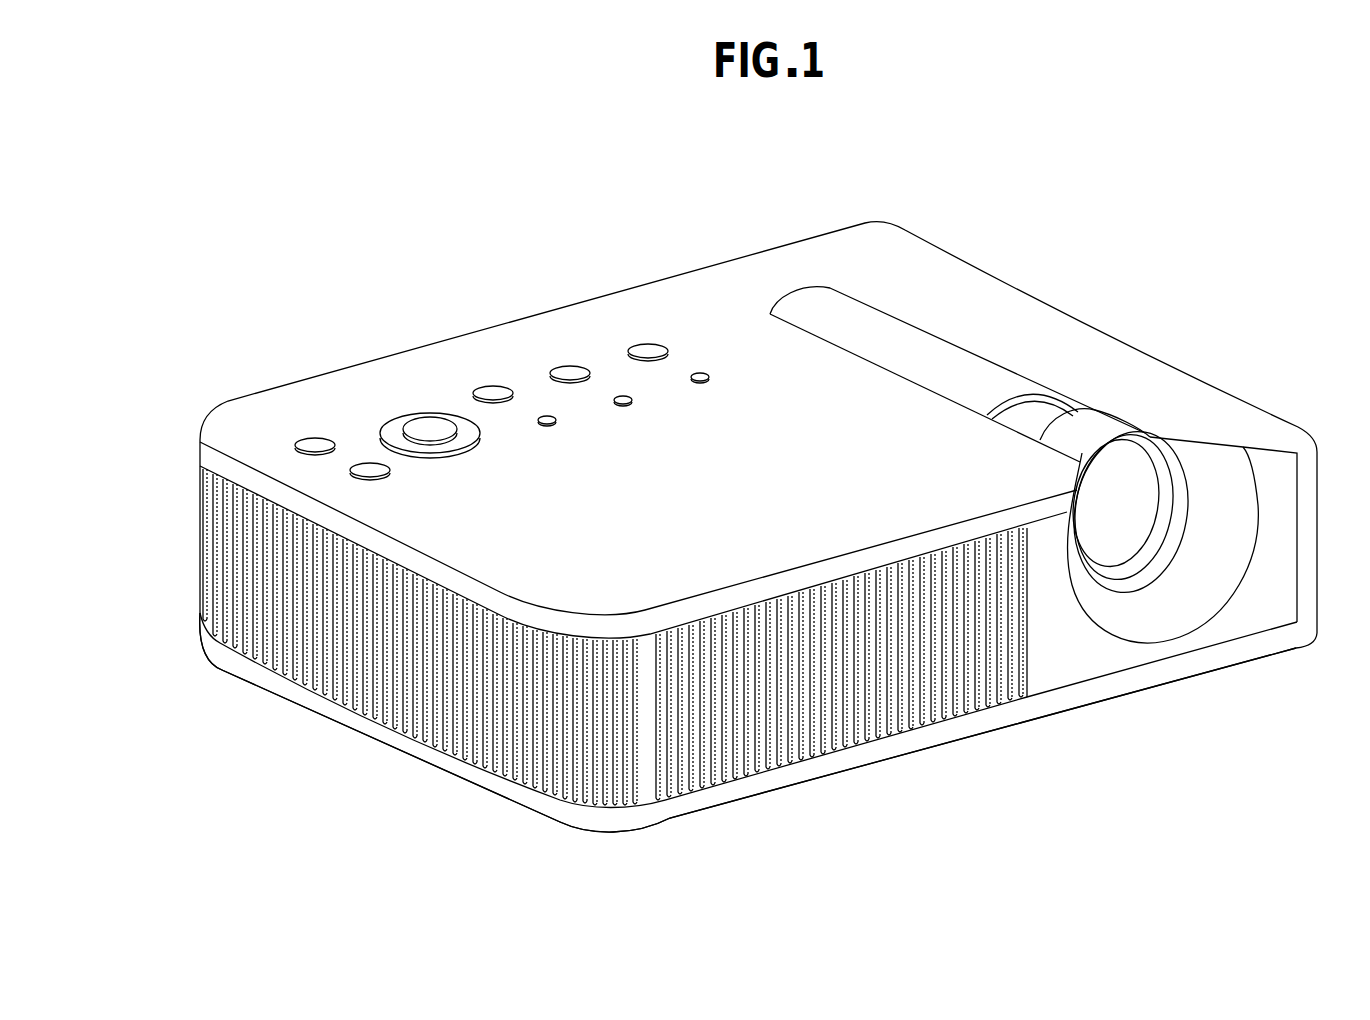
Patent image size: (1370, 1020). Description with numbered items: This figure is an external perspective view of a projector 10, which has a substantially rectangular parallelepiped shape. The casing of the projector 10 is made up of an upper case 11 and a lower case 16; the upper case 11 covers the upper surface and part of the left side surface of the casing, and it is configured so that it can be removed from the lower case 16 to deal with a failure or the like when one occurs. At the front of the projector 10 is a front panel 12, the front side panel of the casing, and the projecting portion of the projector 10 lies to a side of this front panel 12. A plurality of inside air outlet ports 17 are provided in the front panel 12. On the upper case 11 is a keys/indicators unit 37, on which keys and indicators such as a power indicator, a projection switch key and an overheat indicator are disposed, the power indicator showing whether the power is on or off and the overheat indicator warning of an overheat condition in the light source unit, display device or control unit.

The projector 10 is at (941, 170).
The upper case 11 is at (680, 302).
The front panel 12 is at (1058, 655).
The lower case 16 is at (362, 725).
The inside air outlet ports 17 is at (787, 743).
The keys/indicators unit 37 is at (420, 400).